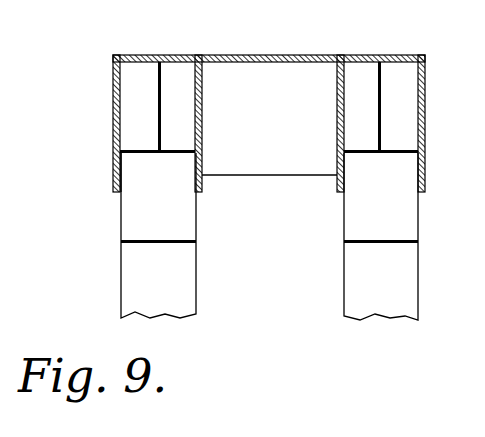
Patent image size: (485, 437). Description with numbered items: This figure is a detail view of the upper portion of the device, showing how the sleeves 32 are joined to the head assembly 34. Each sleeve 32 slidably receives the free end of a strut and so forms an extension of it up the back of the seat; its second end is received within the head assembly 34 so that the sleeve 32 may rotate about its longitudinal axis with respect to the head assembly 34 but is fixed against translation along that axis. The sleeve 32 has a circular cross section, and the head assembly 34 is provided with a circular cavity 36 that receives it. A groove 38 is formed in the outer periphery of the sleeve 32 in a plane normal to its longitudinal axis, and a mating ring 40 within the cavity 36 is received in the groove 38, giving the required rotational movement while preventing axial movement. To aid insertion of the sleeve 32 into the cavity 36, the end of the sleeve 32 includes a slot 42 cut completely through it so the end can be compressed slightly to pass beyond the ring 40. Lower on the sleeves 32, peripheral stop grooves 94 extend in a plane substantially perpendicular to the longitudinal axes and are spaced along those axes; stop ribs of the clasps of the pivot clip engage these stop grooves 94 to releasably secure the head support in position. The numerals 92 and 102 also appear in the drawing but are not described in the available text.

The sleeve 32 is at (197, 290).
The head assembly 34 is at (259, 55).
The circular cavity 36 is at (202, 110).
The groove 38 is at (185, 150).
The ring 40 is at (123, 156).
The slot 42 is at (160, 84).
The frame member 92 is at (0, 218).
The stop grooves 94 is at (378, 244).
The frame element 102 is at (13, 123).